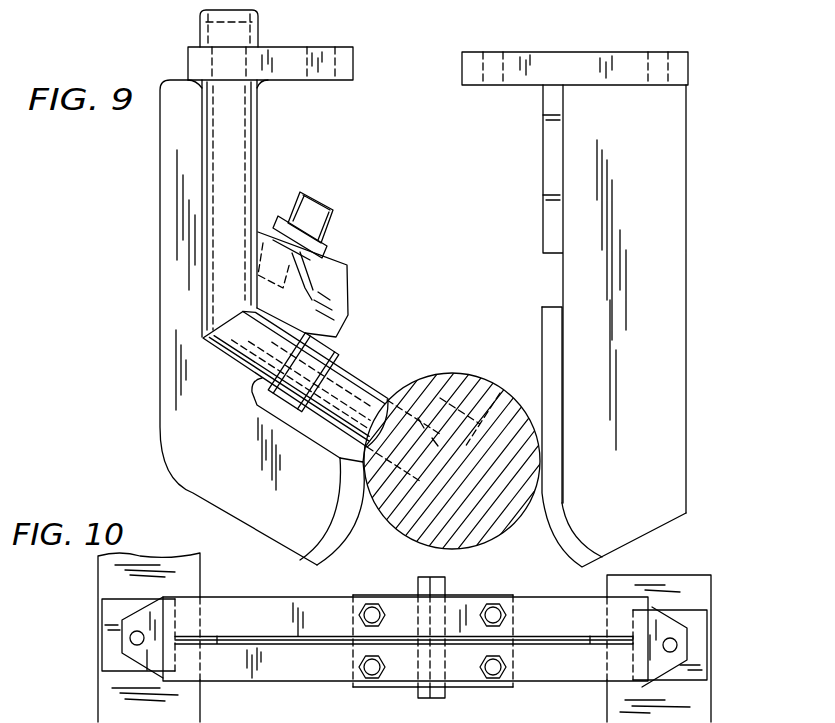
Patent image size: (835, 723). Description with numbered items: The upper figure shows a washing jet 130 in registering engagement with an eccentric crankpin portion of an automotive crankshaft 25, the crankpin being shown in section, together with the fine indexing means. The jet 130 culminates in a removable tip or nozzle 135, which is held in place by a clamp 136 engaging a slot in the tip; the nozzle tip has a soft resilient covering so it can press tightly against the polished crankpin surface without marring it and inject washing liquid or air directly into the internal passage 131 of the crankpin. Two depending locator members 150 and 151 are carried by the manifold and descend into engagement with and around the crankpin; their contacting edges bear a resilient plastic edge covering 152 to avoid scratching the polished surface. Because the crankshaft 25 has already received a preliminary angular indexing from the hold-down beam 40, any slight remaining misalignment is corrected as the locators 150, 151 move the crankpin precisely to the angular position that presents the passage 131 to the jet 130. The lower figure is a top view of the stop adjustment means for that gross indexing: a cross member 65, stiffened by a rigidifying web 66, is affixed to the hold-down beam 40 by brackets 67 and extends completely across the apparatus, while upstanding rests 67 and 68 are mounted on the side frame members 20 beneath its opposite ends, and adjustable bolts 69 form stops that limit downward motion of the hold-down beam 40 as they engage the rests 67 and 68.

In FIG. 9, the jet 130 is at (232, 153).
In FIG. 9, the clamp 136 is at (344, 307).
In FIG. 9, the removable tip or nozzle 135 is at (357, 367).
In FIG. 9, the crankshaft 25 is at (455, 378).
In FIG. 9, the internal passage 131 is at (500, 394).
In FIG. 9, the locator member 150 is at (231, 467).
In FIG. 9, the locator member 151 is at (661, 406).
In FIG. 9, the resilient plastic edge covering 152 is at (342, 530).
In FIG. 10, the bracket / upstanding rest 67 is at (100, 597).
In FIG. 10, the adjustable bolt 69 is at (133, 638).
In FIG. 10, the side frame member 20 is at (102, 690).
In FIG. 10, the hold-down beam 40 is at (441, 592).
In FIG. 10, the rigidifying web 66 is at (543, 642).
In FIG. 10, the cross member 65 is at (548, 672).
In FIG. 10, the upstanding rest 68 is at (690, 685).